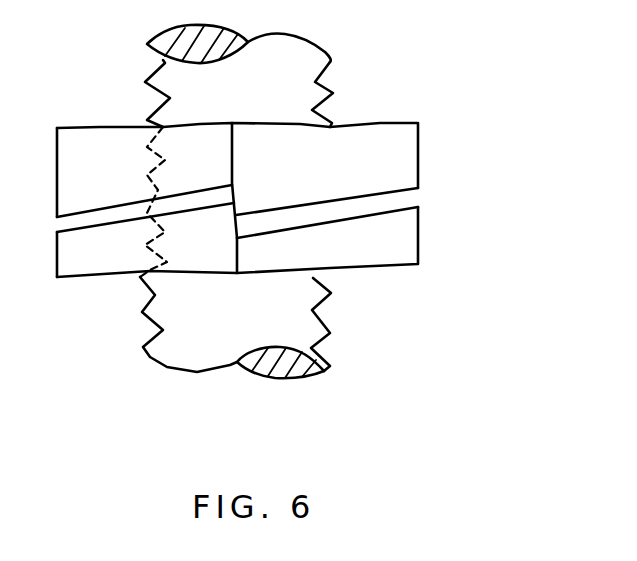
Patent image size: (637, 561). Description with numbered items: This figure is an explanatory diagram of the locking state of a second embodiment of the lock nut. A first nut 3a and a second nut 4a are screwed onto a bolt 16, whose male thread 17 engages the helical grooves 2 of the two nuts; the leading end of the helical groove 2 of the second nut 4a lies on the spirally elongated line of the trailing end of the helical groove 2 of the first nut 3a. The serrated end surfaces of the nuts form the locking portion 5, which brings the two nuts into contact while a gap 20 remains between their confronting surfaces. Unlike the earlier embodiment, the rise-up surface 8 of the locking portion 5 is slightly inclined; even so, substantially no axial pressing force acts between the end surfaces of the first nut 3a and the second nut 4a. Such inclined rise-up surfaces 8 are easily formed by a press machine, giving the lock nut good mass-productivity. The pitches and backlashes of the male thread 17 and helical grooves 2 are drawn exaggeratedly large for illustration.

The helical groove 2 is at (155, 157).
The male thread 17 is at (333, 70).
The first nut 3a is at (418, 148).
The second nut 4a is at (418, 243).
The locking portion 5 is at (237, 203).
The gap 20 is at (405, 200).
The rise-up surface 8 is at (238, 211).
The bolt 16 is at (288, 380).